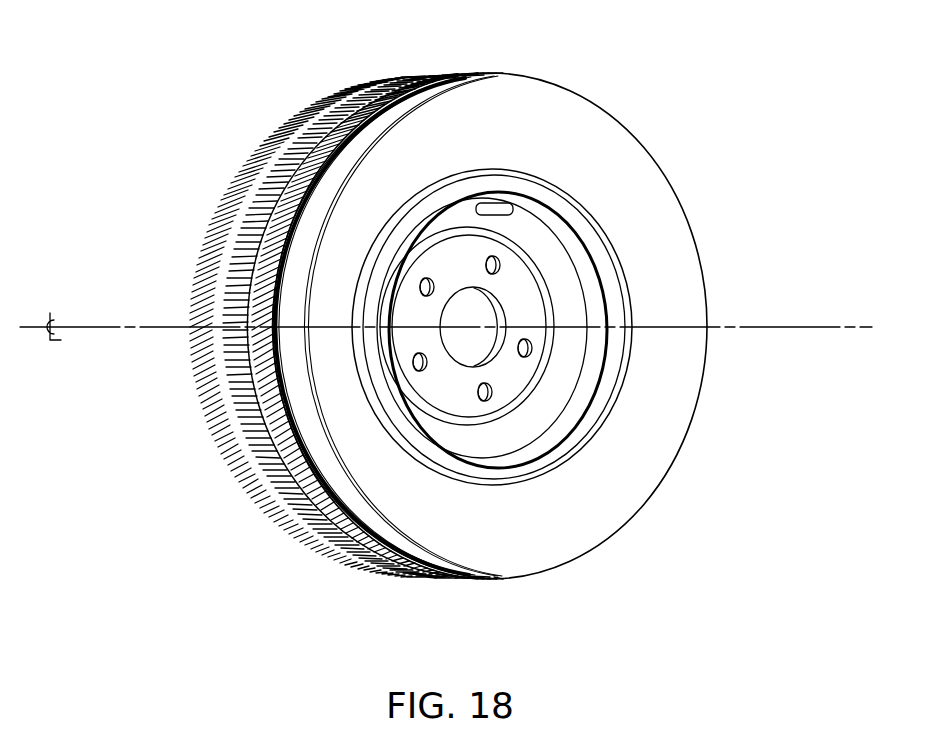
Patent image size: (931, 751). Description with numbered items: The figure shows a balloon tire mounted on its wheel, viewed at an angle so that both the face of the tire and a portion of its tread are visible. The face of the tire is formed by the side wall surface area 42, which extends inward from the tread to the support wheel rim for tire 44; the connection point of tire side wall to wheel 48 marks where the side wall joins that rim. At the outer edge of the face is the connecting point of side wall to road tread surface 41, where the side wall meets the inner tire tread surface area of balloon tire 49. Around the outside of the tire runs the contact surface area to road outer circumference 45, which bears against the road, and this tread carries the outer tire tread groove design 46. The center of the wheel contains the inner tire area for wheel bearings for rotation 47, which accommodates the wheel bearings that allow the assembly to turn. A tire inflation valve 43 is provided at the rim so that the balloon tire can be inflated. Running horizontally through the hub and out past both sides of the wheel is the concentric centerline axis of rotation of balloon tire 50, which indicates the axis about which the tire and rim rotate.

The connecting point of side wall to road tread surface 41 is at (450, 75).
The side wall surface area 42 is at (612, 172).
The tire inflation valve 43 is at (490, 203).
The support wheel rim for tire 44 is at (578, 402).
The contact surface area to road outer circumference 45 is at (425, 575).
The outer tire tread groove design 46 is at (207, 410).
The inner tire area for wheel bearings for rotation 47 is at (458, 364).
The connection point of tire side wall to wheel 48 is at (555, 468).
The inner tire tread surface area of balloon tire 49 is at (267, 138).
The concentric centerline axis of rotation of balloon tire 50 is at (807, 330).